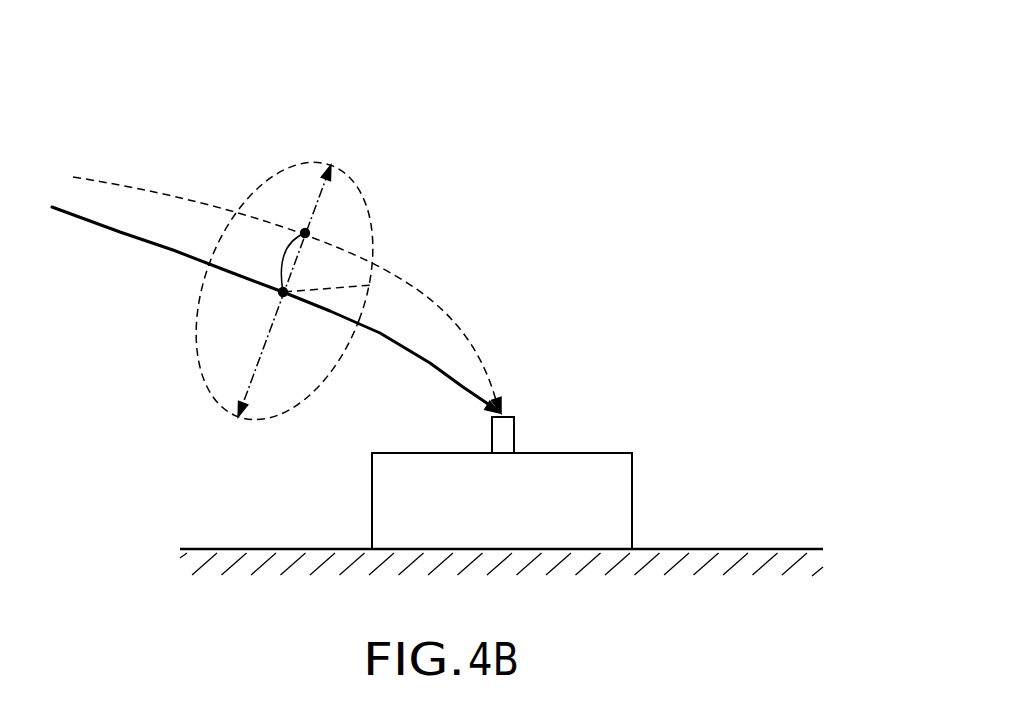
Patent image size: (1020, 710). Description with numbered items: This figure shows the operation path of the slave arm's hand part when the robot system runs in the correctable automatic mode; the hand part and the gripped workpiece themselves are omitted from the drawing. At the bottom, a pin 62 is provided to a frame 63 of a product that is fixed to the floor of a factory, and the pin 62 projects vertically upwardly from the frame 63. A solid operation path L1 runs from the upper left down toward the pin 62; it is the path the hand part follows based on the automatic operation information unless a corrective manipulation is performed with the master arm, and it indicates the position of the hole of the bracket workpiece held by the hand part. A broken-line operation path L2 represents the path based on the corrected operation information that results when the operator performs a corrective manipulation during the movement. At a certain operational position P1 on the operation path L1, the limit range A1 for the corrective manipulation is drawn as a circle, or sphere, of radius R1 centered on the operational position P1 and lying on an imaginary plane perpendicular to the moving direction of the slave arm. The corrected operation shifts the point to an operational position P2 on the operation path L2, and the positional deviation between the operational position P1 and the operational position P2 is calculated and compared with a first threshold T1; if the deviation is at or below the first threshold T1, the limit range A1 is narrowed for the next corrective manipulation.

The operation path L1 is at (118, 230).
The operation path L2 is at (484, 343).
The operational position P1 is at (286, 297).
The operational position P2 is at (303, 228).
The first threshold T1 is at (328, 216).
The limit range A1 is at (370, 217).
The radius R1 is at (370, 262).
The pin 62 is at (507, 433).
The frame 63 is at (627, 497).